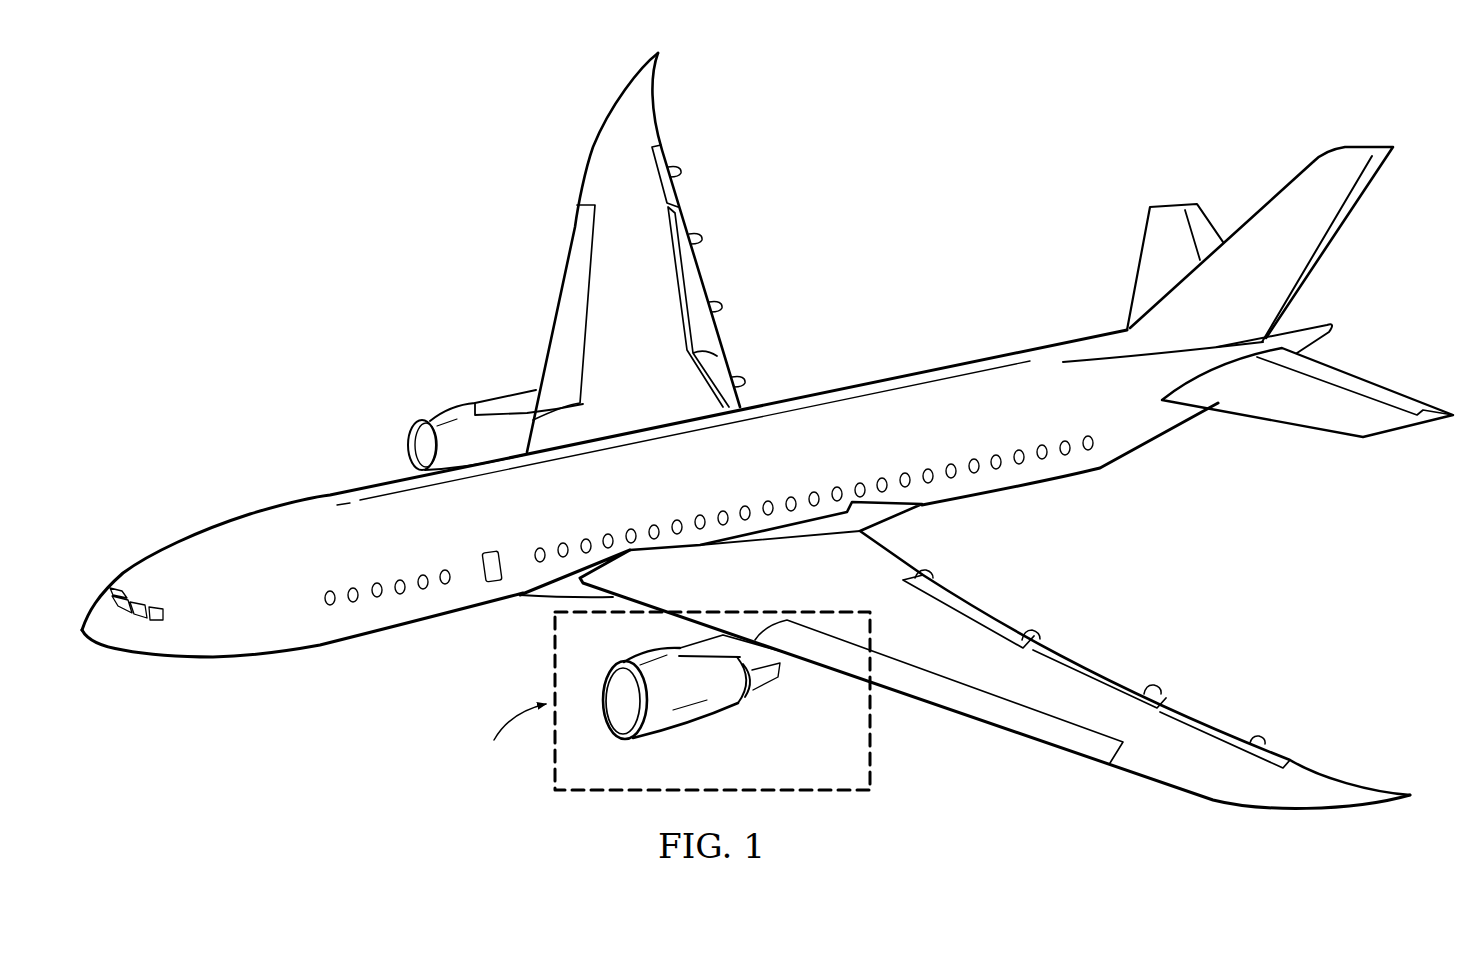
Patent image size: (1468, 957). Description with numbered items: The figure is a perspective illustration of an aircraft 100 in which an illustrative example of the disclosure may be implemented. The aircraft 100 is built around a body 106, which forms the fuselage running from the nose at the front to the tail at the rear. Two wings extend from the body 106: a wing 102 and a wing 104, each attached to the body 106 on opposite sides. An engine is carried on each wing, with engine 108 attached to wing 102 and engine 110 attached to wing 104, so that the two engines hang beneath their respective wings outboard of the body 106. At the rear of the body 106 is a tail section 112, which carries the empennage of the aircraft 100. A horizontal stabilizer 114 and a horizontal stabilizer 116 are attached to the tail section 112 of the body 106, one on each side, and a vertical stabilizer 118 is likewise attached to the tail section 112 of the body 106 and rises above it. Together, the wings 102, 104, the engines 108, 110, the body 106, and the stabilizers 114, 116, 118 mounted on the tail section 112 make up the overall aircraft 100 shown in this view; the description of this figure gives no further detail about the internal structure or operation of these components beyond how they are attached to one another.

The aircraft 100 is at (360, 204).
The wing 102 is at (596, 84).
The wing 104 is at (1314, 822).
The body 106 is at (266, 510).
The engine 108 is at (453, 403).
The engine 110 is at (693, 727).
The tail section 112 is at (1205, 471).
The horizontal stabilizer 114 is at (1140, 264).
The horizontal stabilizer 116 is at (1312, 425).
The vertical stabilizer 118 is at (1336, 233).